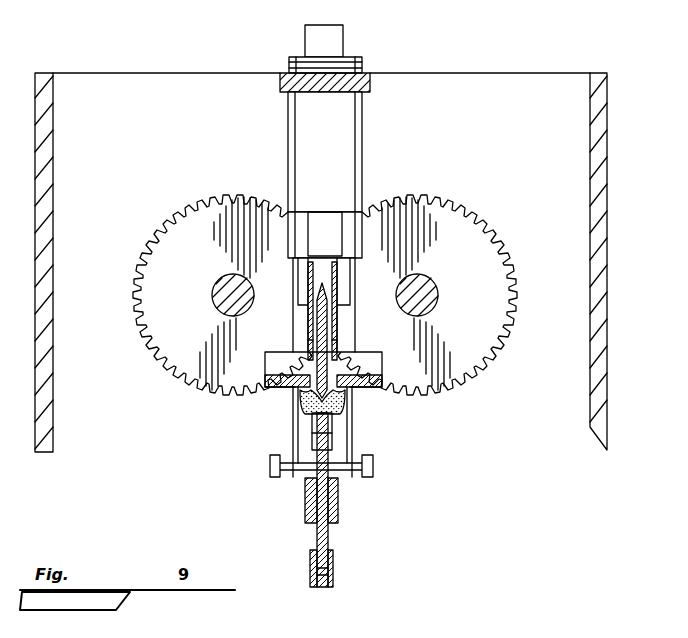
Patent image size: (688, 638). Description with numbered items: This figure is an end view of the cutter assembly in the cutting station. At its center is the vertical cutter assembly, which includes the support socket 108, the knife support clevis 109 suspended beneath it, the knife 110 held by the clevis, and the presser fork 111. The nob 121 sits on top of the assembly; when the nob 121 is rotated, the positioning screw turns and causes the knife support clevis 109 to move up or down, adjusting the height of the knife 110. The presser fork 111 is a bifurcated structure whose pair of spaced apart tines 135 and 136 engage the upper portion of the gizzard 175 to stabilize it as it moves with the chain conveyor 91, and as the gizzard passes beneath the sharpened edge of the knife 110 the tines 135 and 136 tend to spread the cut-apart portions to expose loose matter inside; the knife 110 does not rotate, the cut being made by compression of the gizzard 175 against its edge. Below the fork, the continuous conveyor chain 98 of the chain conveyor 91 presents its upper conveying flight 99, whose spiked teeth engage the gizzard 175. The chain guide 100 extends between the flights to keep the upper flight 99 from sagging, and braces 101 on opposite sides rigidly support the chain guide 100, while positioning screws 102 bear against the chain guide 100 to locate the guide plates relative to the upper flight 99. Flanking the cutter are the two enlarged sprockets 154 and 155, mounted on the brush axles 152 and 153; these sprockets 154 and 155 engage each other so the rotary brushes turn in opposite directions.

The chain conveyor 91 is at (318, 600).
The continuous conveyor chain 98 is at (333, 578).
The upper conveying flight 99 is at (312, 445).
The chain guide 100 is at (328, 535).
The braces 101 is at (305, 503).
The positioning screws 102 is at (373, 465).
The support socket 108 is at (338, 143).
The knife support clevis 109 is at (325, 222).
The knife 110 is at (323, 372).
The presser fork 111 is at (384, 355).
The nob 121 is at (327, 47).
The tine 135 is at (282, 386).
The tine 136 is at (373, 388).
The axle 152 is at (240, 292).
The axle 153 is at (432, 297).
The enlarged sprocket 154 is at (197, 218).
The enlarged sprocket 155 is at (477, 220).
The gizzard 175 is at (352, 419).